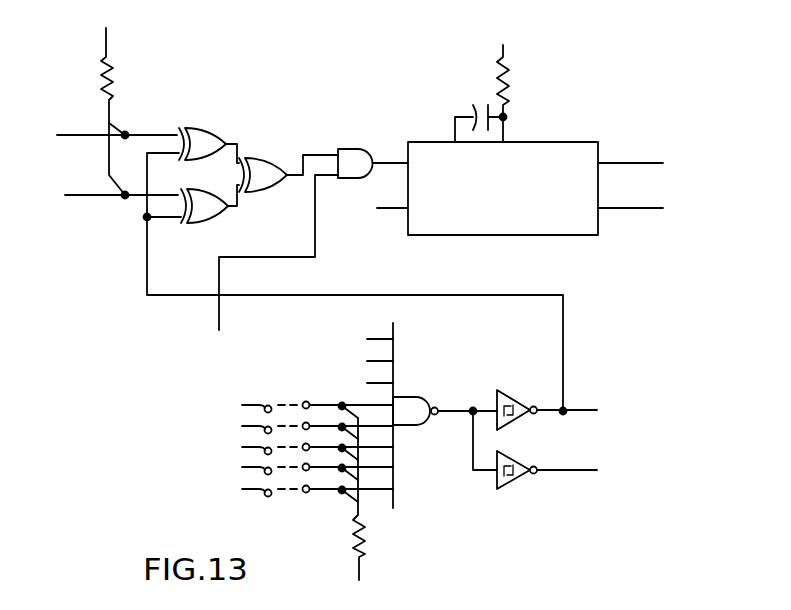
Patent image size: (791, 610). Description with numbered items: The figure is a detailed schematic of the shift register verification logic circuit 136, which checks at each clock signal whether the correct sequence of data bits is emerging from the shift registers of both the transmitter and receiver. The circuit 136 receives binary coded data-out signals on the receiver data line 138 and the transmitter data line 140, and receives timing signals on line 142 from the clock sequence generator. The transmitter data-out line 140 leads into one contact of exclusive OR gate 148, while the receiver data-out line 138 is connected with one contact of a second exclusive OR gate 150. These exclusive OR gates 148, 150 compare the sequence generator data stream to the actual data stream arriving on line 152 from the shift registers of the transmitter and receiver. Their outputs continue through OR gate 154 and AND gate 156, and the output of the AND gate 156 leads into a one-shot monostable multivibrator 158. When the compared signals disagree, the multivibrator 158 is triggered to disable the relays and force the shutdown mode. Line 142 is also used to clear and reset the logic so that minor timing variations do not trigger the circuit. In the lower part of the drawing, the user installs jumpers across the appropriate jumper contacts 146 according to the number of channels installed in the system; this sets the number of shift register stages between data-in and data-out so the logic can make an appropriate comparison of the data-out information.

The shift register verification logic circuit 136 is at (568, 68).
The receiver data line 138 is at (92, 193).
The transmitter data line 140 is at (80, 134).
The timing signal line 142 is at (219, 321).
The jumper contacts 146 is at (340, 392).
The exclusive OR gate 148 is at (207, 132).
The second exclusive OR gate 150 is at (217, 216).
The data stream line 152 is at (147, 268).
The OR gate 154 is at (280, 147).
The AND gate 156 is at (368, 139).
The one-shot monostable multivibrator 158 is at (537, 140).